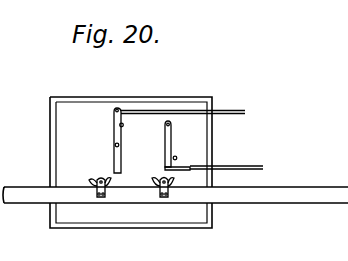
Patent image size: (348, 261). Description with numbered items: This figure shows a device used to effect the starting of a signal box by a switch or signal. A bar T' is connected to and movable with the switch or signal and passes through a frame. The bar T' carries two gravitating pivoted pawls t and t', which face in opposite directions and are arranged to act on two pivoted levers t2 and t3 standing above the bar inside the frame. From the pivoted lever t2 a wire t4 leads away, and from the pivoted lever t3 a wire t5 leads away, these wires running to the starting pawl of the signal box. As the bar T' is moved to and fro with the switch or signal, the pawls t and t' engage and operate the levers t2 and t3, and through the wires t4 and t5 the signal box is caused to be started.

The bar T' is at (175, 187).
The gravitating pivoted pawl t is at (95, 179).
The gravitating pivoted pawl t' is at (171, 185).
The pivoted lever t2 is at (113, 135).
The pivoted lever t3 is at (171, 144).
The wire t4 is at (185, 103).
The wire t5 is at (228, 157).